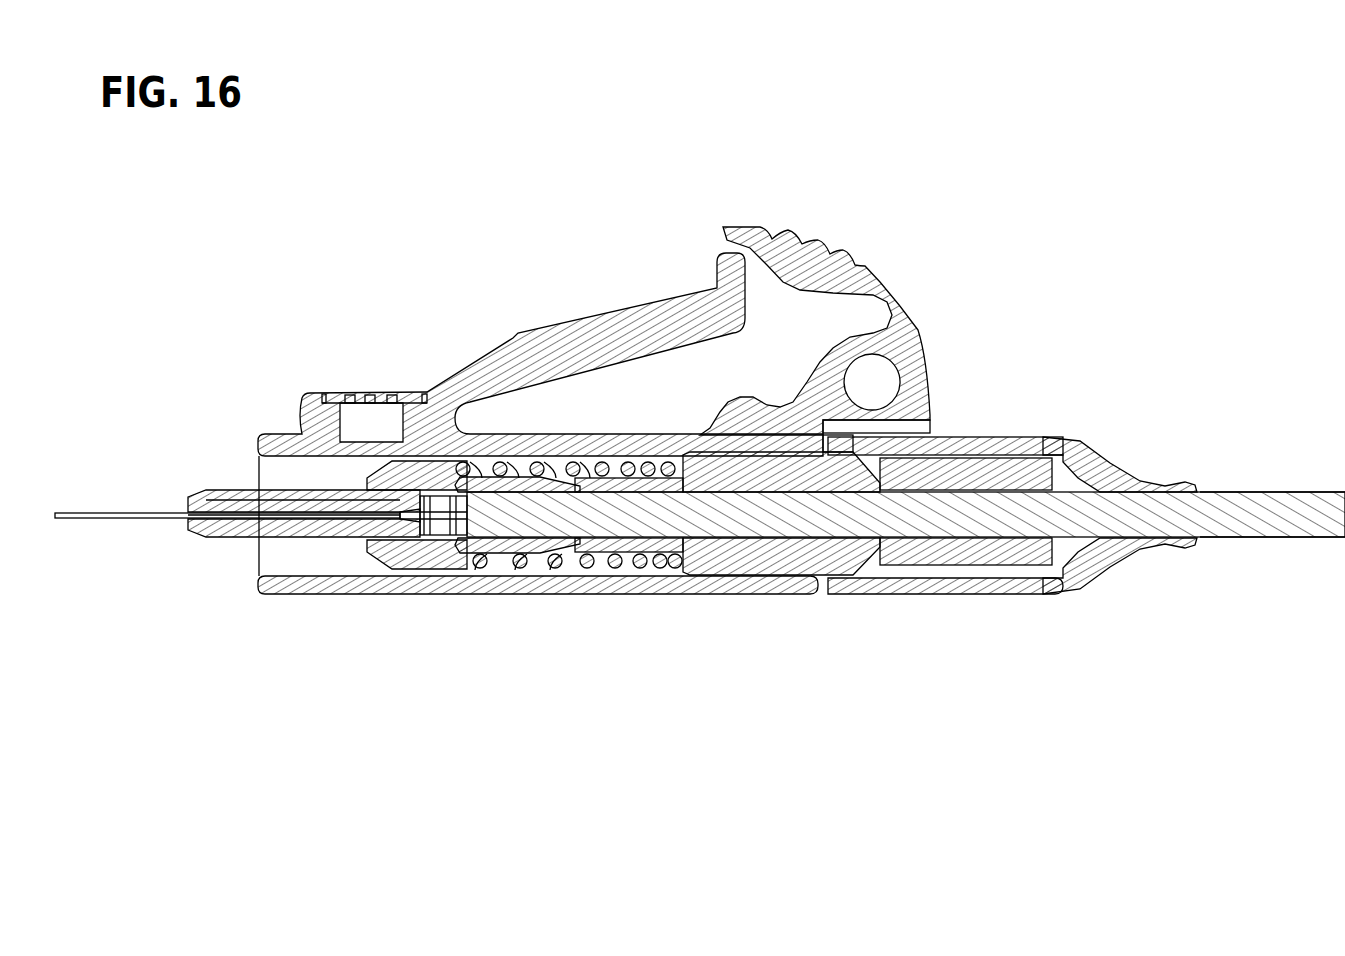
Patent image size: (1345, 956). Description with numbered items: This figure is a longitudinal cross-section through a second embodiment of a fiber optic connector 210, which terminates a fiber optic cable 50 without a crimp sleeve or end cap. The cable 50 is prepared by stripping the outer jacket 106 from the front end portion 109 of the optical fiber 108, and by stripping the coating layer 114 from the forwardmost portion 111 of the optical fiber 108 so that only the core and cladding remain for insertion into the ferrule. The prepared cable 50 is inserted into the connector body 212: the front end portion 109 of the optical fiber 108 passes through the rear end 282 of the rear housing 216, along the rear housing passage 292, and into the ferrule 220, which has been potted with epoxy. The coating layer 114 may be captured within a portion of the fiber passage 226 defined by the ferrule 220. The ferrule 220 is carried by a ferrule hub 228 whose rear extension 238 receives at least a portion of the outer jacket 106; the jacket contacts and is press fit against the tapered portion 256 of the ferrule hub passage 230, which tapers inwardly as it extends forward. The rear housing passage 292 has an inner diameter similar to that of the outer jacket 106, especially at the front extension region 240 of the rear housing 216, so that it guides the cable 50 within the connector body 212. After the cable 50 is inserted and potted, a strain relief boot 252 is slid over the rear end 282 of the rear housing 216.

The fiber optic cable 50 is at (1257, 538).
The outer jacket 106 is at (1264, 491).
The optical fiber 108 is at (84, 508).
The front end portion 109 is at (399, 512).
The forwardmost portion 111 is at (222, 514).
The coating layer 114 is at (370, 513).
The fiber optic connector 210 is at (450, 313).
The connector body 212 is at (678, 433).
The rear housing 216 is at (743, 567).
The ferrule 220 is at (297, 528).
The fiber passage 226 is at (293, 508).
The ferrule hub 228 is at (440, 553).
The ferrule hub passage 230 is at (530, 538).
The rear extension 238 is at (475, 478).
The front extension region 240 is at (613, 482).
The strain relief boot 252 is at (1058, 440).
The tapered portion 256 is at (487, 494).
The rear end 282 is at (933, 548).
The rear housing passage 292 is at (941, 488).